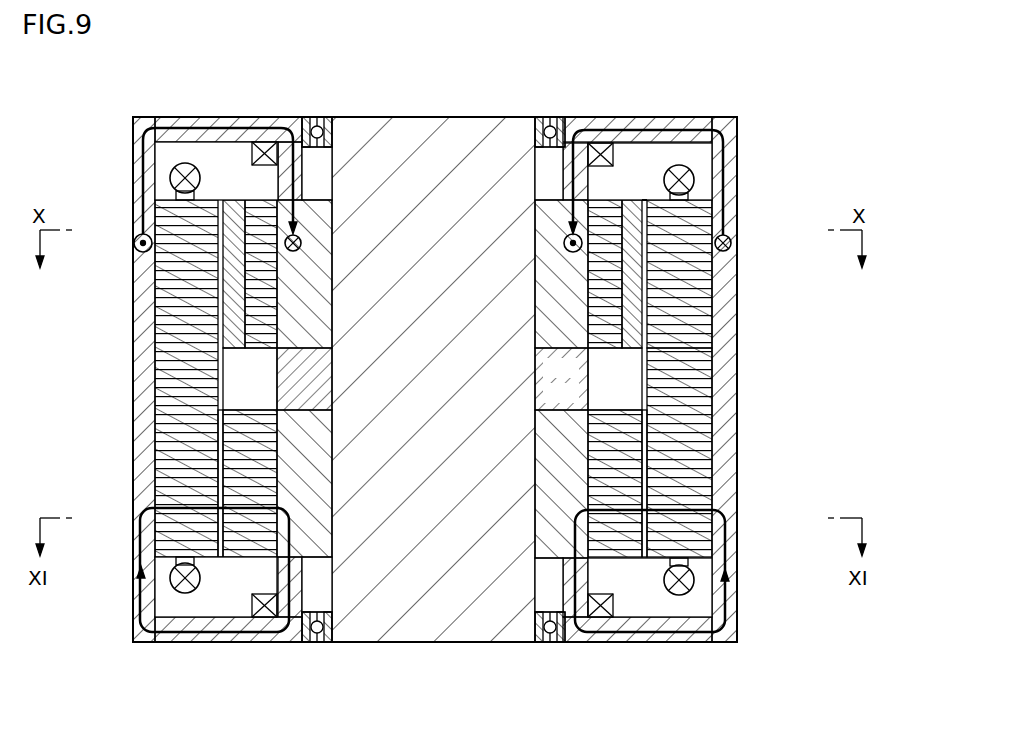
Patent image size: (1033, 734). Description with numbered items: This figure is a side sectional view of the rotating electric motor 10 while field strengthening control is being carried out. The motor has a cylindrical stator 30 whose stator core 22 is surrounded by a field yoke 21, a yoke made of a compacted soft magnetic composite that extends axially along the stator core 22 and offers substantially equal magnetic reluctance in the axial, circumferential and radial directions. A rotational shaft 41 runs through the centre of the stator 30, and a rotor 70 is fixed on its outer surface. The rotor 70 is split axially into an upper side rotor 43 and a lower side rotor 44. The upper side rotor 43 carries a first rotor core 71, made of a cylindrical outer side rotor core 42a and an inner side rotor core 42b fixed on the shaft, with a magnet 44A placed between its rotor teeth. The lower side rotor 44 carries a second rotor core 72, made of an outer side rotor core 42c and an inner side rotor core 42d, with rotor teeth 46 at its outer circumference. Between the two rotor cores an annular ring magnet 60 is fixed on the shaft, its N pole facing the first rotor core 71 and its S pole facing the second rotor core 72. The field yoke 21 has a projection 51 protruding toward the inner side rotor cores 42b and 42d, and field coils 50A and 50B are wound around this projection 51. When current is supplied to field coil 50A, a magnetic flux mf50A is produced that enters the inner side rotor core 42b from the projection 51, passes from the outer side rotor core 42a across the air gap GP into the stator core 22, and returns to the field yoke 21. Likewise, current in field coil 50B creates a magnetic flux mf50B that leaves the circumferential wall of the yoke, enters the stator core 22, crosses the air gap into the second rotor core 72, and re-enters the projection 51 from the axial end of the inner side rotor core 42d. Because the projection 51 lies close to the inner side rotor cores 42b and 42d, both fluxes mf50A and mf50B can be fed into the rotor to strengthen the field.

The rotating electric motor 10 is at (762, 118).
The field yoke 21 is at (726, 117).
The stator core 22 is at (692, 399).
The stator 30 is at (693, 222).
The rotational shaft 41 is at (483, 264).
The outer side rotor core 42a is at (597, 320).
The inner side rotor core 42b is at (560, 293).
The outer side rotor core 42c is at (618, 494).
The inner side rotor core 42d is at (562, 466).
The upper side rotor 43 is at (549, 214).
The lower side rotor 44 is at (230, 568).
The magnet 44A is at (236, 210).
The rotor teeth 46 is at (632, 565).
The field coil 50A is at (596, 145).
The field coil 50B is at (597, 620).
The projection 51 is at (302, 183).
The ring magnet 60 is at (590, 375).
The rotor 70 is at (633, 190).
The rotor core 71 is at (694, 274).
The rotor core 72 is at (694, 484).
The air gap GP is at (645, 207).
The magnetic flux mf50A is at (140, 151).
The magnetic flux mf50B is at (140, 619).